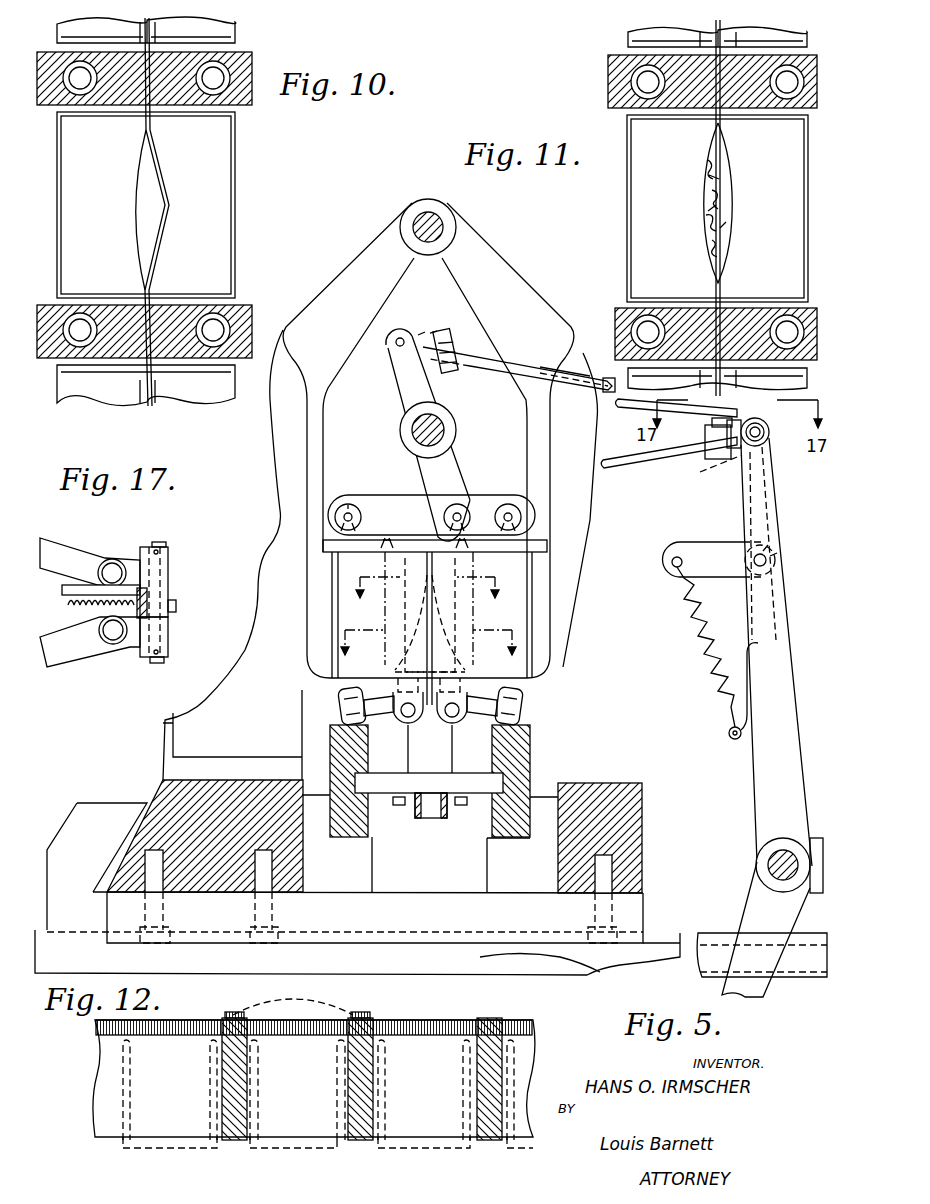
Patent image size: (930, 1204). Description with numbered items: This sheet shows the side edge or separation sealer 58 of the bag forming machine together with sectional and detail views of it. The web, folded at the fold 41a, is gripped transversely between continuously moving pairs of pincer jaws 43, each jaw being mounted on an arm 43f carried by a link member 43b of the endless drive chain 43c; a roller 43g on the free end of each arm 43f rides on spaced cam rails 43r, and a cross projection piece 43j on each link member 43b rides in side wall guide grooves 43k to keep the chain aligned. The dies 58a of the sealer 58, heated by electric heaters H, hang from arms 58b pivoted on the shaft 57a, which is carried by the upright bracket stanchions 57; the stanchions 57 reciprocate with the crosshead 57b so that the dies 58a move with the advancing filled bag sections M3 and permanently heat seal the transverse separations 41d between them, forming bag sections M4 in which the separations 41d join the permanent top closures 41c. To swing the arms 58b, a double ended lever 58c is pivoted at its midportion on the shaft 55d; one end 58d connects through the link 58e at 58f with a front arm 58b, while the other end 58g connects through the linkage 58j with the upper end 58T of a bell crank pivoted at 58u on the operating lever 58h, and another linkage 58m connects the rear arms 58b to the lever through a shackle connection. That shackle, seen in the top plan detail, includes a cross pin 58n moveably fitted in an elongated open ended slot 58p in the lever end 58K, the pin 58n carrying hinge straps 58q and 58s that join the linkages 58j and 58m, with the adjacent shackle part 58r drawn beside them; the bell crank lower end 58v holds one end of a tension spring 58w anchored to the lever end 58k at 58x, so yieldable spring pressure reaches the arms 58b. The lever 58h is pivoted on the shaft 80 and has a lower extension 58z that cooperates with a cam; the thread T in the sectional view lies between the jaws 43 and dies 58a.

In FIG. 12, the fold 41a is at (106, 1140).
In FIG. 10, the permanent top closure 41c is at (164, 228).
In FIG. 12, the permanent top closure 41c is at (412, 1027).
In FIG. 10, the side edge or separation 41d is at (152, 77).
In FIG. 11, the side edge or separation 41d is at (712, 86).
In FIG. 12, the side edge or separation 41d is at (372, 1030).
In FIG. 10, the pincer jaws 43 is at (218, 208).
In FIG. 11, the pincer jaws 43 is at (652, 218).
In FIG. 12, the pincer jaws 43 is at (195, 1148).
In FIG. 5, the link member 43b is at (430, 750).
In FIG. 5, the endless drive chain 43c is at (418, 818).
In FIG. 5, the arm 43f is at (476, 723).
In FIG. 5, the roller 43g is at (340, 700).
In FIG. 5, the cross projection piece 43j is at (477, 786).
In FIG. 5, the side wall guide groove 43k is at (500, 783).
In FIG. 5, the cam rail 43r is at (358, 745).
In FIG. 5, the shaft 55d is at (440, 433).
In FIG. 5, the upright bracket stanchion 57 is at (263, 552).
In FIG. 5, the shaft 57a is at (430, 213).
In FIG. 5, the crosshead 57b is at (510, 910).
In FIG. 5, the side edge or separation sealer 58 is at (552, 296).
In FIG. 10, the dies 58a is at (242, 88).
In FIG. 12, the dies 58a is at (330, 1010).
In FIG. 5, the dies 58a is at (463, 568).
In FIG. 5, the arms 58b is at (347, 287).
In FIG. 5, the double ended lever 58c is at (468, 444).
In FIG. 5, the lever end 58d is at (456, 484).
In FIG. 5, the link 58e is at (392, 513).
In FIG. 5, the connection 58f is at (338, 498).
In FIG. 5, the lever end 58g is at (402, 378).
In FIG. 5, the operating lever 58h is at (764, 643).
In FIG. 17, the linkage 58j is at (68, 550).
In FIG. 5, the linkage 58j is at (622, 408).
In FIG. 5, the lever end 58k is at (777, 450).
In FIG. 17, the linkage 58m is at (65, 652).
In FIG. 5, the linkage 58m is at (622, 465).
In FIG. 17, the cross pin 58n is at (157, 660).
In FIG. 17, the elongated open ended slot 58p is at (147, 607).
In FIG. 17, the hinge strap 58q is at (132, 562).
In FIG. 5, the bracket 58r is at (706, 452).
In FIG. 17, the hinge strap 58s is at (130, 644).
In FIG. 5, the hinge strap 58s is at (736, 456).
In FIG. 17, the bell crank upper end 58T is at (172, 553).
In FIG. 17, the lever end 58K is at (166, 588).
In FIG. 5, the bell crank pivot 58u is at (776, 572).
In FIG. 17, the bell crank lower end 58v is at (88, 585).
In FIG. 5, the bell crank lower end 58v is at (704, 553).
In FIG. 17, the tension spring 58w is at (102, 601).
In FIG. 5, the tension spring 58w is at (689, 612).
In FIG. 5, the spring anchor 58x is at (738, 740).
In FIG. 5, the lower extension 58z is at (757, 908).
In FIG. 5, the shaft 80 is at (768, 864).
In FIG. 10, the electric heater H is at (80, 80).
In FIG. 11, the electric heater H is at (646, 82).
In FIG. 11, the thread T is at (722, 180).
In FIG. 12, the filled bag section M3 is at (160, 1107).
In FIG. 11, the bag section M4 is at (738, 210).
In FIG. 12, the bag section M4 is at (307, 1117).